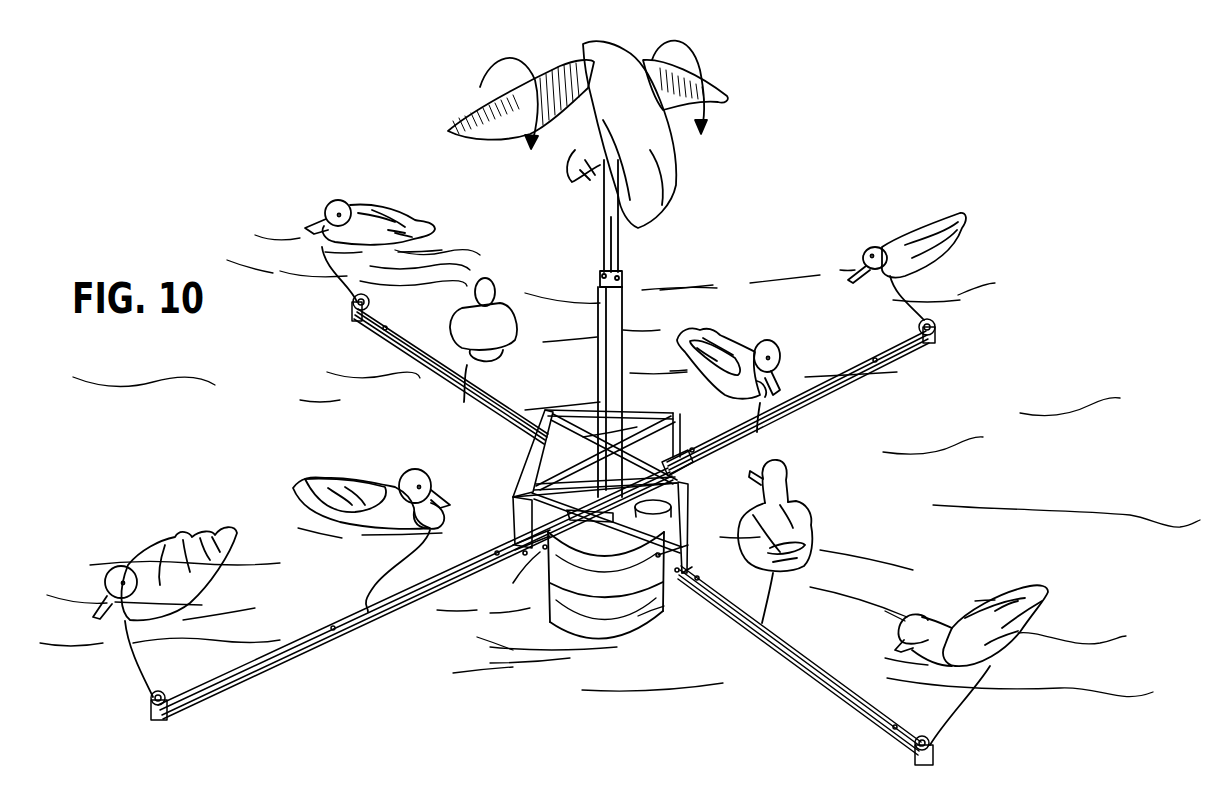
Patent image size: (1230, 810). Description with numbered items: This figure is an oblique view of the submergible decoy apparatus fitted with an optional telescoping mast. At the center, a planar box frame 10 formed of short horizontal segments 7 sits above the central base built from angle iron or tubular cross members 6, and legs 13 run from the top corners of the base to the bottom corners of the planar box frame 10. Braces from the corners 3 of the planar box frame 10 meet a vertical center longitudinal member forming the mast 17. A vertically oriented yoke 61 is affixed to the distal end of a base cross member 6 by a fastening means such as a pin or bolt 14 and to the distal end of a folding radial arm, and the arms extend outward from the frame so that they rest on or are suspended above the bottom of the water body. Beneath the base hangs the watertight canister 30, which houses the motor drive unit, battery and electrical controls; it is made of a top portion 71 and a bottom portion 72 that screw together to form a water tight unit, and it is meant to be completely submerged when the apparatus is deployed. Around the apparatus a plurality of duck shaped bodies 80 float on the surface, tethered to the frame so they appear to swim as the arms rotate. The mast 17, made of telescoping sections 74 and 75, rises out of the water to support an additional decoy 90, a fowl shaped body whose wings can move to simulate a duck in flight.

The corner 3 is at (673, 423).
The cross member 6 is at (650, 548).
The short horizontal segment 7 is at (643, 413).
The planar box frame 10 is at (577, 400).
The leg 13 is at (513, 530).
The pin or bolt 14 is at (545, 550).
The mast 17 is at (620, 322).
The canister 30 is at (573, 620).
The yoke 61 is at (513, 583).
The top portion 71 is at (606, 571).
The bottom portion 72 is at (606, 616).
The mast section 74 is at (603, 257).
The mast section 75 is at (598, 300).
The duck shaped body 80 is at (368, 205).
The additional decoy 90 is at (717, 92).